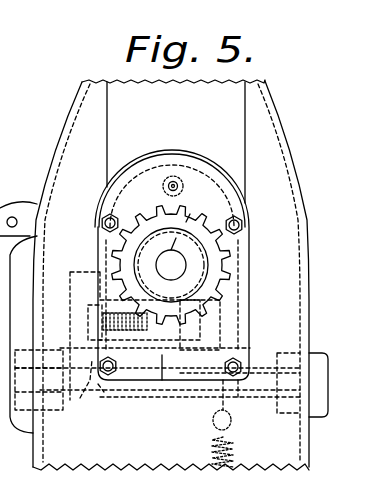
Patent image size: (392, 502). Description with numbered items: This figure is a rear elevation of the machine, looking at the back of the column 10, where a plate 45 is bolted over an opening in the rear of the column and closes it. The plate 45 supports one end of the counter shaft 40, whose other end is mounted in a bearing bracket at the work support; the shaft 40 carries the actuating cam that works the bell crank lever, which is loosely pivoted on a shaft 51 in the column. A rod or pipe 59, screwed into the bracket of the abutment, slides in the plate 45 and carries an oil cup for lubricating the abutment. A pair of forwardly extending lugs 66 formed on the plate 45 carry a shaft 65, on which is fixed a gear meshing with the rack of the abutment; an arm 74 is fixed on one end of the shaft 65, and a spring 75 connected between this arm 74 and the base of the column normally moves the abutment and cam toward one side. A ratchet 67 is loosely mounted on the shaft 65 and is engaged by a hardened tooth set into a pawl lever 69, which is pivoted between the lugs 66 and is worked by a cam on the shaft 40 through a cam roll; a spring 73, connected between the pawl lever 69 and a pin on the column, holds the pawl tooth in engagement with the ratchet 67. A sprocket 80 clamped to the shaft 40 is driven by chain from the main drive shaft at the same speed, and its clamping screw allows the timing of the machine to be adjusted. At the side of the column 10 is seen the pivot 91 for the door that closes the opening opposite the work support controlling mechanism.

The column 10 is at (281, 113).
The counter shaft 40 is at (171, 265).
The plate 45 is at (244, 335).
The shaft 51 is at (238, 397).
The rod or pipe 59 is at (177, 182).
The shaft 65 is at (162, 380).
The lugs 66 is at (222, 313).
The ratchet 67 is at (78, 272).
The pawl lever 69 is at (102, 385).
The spring 73 is at (82, 398).
The arm 74 is at (221, 403).
The spring 75 is at (212, 446).
The sprocket 80 is at (190, 214).
The pivot 91 is at (9, 210).